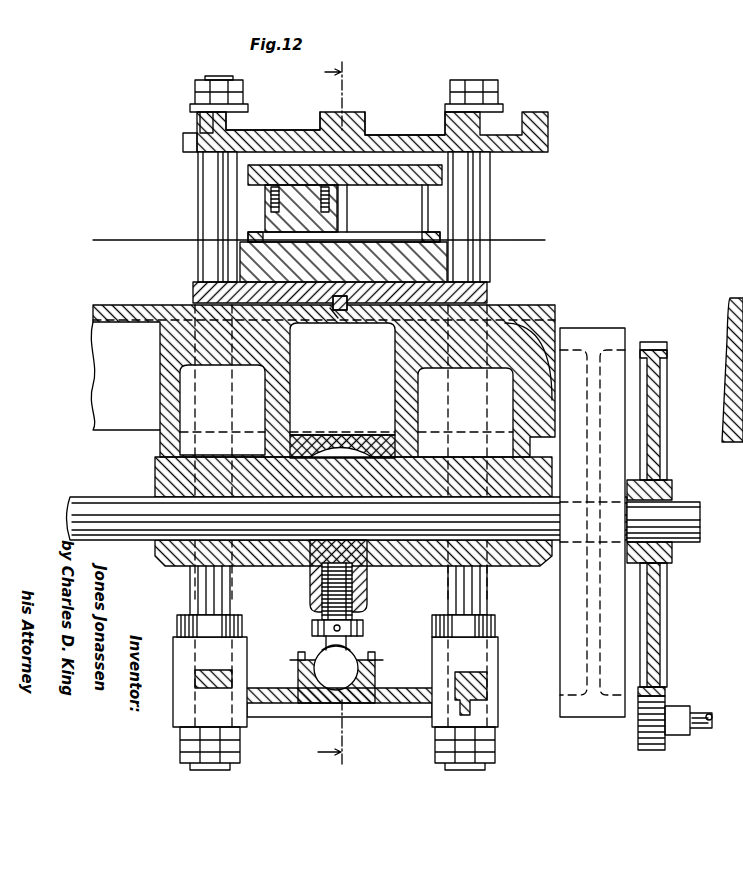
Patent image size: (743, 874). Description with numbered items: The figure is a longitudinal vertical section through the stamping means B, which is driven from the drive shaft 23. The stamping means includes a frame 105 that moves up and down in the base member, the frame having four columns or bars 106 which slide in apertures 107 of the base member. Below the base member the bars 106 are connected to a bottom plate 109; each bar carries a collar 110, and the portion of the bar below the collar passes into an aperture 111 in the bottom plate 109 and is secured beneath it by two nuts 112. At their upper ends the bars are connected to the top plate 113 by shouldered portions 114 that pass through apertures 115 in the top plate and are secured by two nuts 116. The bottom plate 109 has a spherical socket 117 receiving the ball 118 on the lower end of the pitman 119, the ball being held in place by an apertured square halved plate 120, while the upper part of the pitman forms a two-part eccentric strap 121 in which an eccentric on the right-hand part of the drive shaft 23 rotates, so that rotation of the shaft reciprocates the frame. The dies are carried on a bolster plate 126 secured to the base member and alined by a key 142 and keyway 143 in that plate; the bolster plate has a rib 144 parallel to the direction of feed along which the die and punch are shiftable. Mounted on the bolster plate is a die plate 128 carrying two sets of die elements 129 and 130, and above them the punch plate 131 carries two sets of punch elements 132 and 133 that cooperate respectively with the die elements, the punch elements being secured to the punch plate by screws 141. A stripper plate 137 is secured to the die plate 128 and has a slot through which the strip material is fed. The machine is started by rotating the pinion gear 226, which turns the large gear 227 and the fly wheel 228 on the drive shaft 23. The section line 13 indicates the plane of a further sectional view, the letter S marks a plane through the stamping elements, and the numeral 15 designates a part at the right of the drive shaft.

The section line 13- 13 is at (336, 418).
The crank pin 15 is at (700, 684).
The drive shaft 23 is at (700, 540).
The frame 105 is at (349, 360).
The columns or bars 106 is at (195, 583).
The apertures 107 is at (180, 398).
The bottom plate 109 is at (400, 720).
The collar 110 is at (242, 628).
The aperture 111 is at (492, 673).
The nuts 112 is at (497, 748).
The top plate 113 is at (400, 112).
The shouldered portions 114 is at (195, 106).
The apertures 115 is at (197, 125).
The nuts 116 is at (210, 78).
The spherical socket 117 is at (335, 690).
The ball 118 is at (336, 705).
The pitman 119 is at (317, 580).
The apertured square halved plate 120 is at (365, 632).
The eccentric strap 121 is at (335, 440).
The bolster plate 126 is at (487, 300).
The die plate 128 is at (245, 262).
The die elements 129 is at (262, 238).
The die elements 130 is at (420, 224).
The punch plate 131 is at (442, 177).
The punch elements 132 is at (272, 196).
The punch elements 133 is at (348, 208).
The stripper plate 137 is at (440, 232).
The screws 141 is at (312, 145).
The key 142 is at (330, 312).
The keyway 143 is at (342, 312).
The rib 144 is at (727, 362).
The pinion gear 226 is at (650, 750).
The large gear 227 is at (652, 345).
The fly wheel 228 is at (602, 717).
The section plane S is at (319, 224).
The stamping means B is at (538, 200).